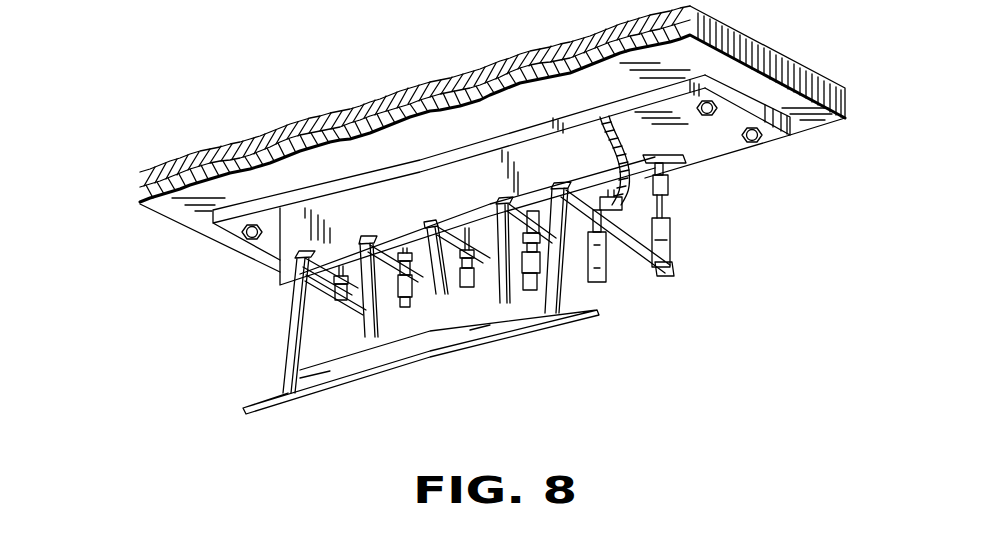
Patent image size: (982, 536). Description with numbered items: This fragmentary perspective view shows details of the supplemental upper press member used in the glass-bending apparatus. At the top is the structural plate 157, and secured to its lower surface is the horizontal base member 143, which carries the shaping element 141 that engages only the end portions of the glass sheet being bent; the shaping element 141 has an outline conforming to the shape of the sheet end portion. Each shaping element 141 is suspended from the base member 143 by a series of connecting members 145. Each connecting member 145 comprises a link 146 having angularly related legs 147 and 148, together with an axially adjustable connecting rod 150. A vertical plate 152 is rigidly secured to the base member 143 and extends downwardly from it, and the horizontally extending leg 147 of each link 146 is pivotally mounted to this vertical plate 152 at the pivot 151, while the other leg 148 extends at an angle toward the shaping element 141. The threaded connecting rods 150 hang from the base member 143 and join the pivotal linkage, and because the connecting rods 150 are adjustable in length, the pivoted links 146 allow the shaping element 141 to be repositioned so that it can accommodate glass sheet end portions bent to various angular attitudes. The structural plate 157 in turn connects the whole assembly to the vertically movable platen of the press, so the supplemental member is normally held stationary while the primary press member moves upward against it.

The shaping element 141 is at (335, 370).
The horizontal base member 143 is at (777, 135).
The connecting member 145 is at (441, 284).
The link 146 is at (279, 364).
The horizontally extending leg 147 is at (380, 262).
The leg 148 is at (297, 300).
The connecting rod 150 is at (584, 195).
The pivotal mounting 151 is at (410, 255).
The vertical plate 152 is at (298, 222).
The structural plate 157 is at (170, 203).